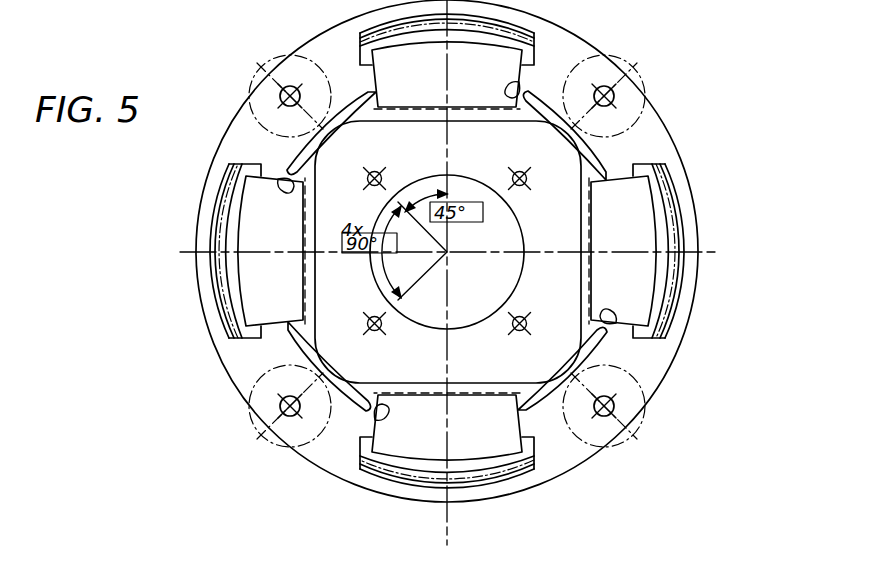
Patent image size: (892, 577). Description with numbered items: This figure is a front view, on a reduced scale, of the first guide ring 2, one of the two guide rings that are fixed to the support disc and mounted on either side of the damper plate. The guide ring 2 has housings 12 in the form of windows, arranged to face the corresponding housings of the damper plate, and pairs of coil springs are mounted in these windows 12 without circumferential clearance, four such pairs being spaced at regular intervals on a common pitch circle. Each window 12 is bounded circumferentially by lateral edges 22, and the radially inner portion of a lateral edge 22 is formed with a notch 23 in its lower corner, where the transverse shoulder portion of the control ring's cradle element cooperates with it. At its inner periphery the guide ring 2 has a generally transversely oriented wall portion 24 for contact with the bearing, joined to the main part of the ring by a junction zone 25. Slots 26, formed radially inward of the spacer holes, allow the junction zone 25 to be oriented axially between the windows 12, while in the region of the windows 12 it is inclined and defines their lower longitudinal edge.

The first guide ring 2 is at (608, 72).
The housing 12 is at (245, 313).
The lateral edge 22 is at (378, 436).
The notch 23 is at (373, 420).
The wall portion 24 is at (555, 327).
The junction zone 25 is at (297, 350).
The slots 26 is at (598, 355).